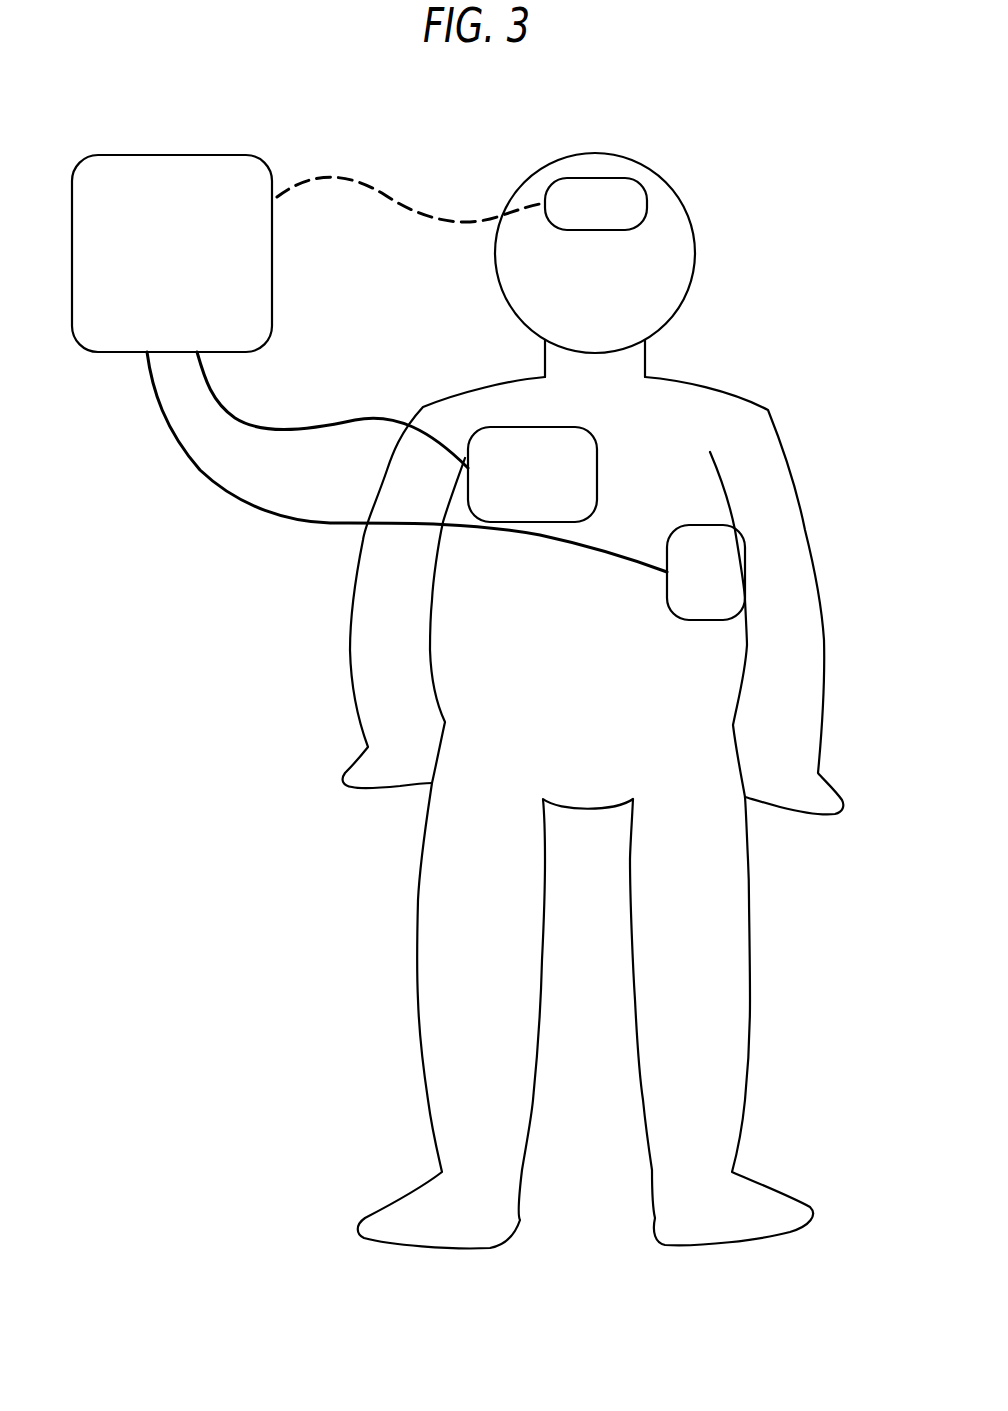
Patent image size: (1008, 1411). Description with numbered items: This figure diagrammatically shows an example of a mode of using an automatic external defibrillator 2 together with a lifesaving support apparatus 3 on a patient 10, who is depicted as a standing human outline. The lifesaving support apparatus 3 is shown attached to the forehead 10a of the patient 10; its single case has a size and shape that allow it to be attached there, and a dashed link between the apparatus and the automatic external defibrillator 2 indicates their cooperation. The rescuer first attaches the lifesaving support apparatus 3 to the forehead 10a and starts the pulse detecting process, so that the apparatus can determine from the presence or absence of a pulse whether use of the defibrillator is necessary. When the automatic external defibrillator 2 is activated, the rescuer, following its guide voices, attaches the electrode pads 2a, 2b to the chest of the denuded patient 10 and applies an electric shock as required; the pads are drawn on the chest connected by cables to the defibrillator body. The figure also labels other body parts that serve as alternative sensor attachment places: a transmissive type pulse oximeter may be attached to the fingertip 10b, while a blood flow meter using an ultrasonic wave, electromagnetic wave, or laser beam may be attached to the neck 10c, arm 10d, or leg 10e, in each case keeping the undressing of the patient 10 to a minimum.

The automatic external defibrillator 2 is at (232, 292).
The electrode pad 2a is at (500, 445).
The electrode pad 2b is at (720, 587).
The lifesaving support apparatus 3 is at (563, 193).
The patient 10 is at (832, 256).
The forehead 10a is at (650, 192).
The fingertip 10b is at (363, 778).
The neck 10c is at (645, 363).
The arm 10d is at (763, 497).
The leg 10e is at (713, 918).